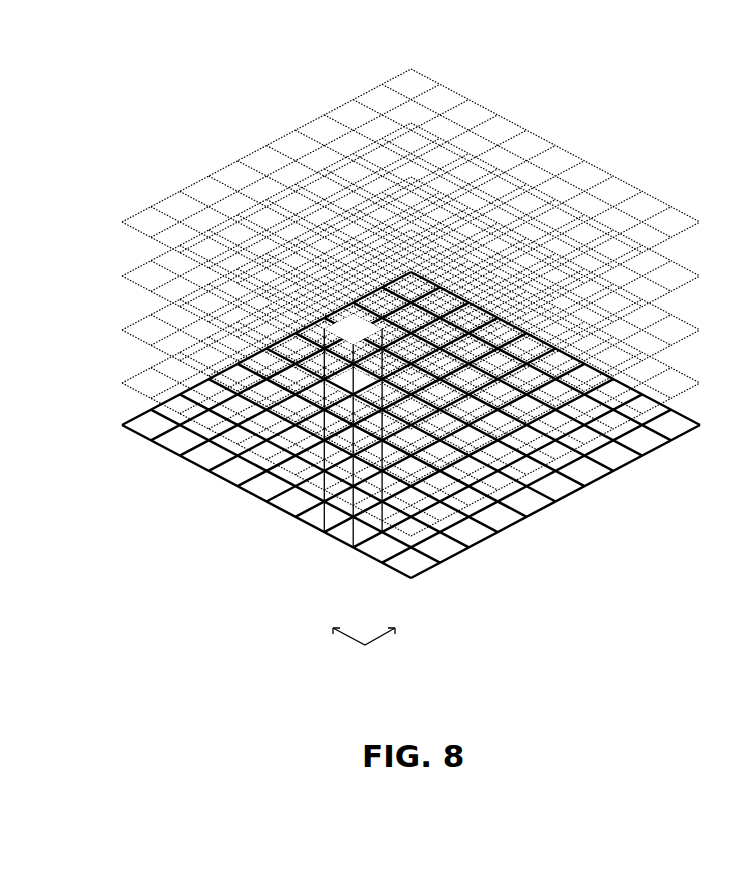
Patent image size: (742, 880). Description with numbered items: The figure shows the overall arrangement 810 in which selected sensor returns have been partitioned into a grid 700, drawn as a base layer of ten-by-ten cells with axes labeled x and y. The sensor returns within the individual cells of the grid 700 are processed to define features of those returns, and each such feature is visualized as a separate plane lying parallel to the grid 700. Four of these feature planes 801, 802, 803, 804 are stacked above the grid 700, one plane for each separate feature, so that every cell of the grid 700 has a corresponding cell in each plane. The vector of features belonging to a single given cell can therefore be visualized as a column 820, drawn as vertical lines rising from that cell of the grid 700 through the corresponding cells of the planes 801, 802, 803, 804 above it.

The feature map stack 810 is at (86, 106).
The grid 700 is at (180, 469).
The plane 801 is at (118, 383).
The plane 802 is at (118, 330).
The plane 803 is at (118, 276).
The plane 804 is at (118, 222).
The column 820 is at (314, 494).